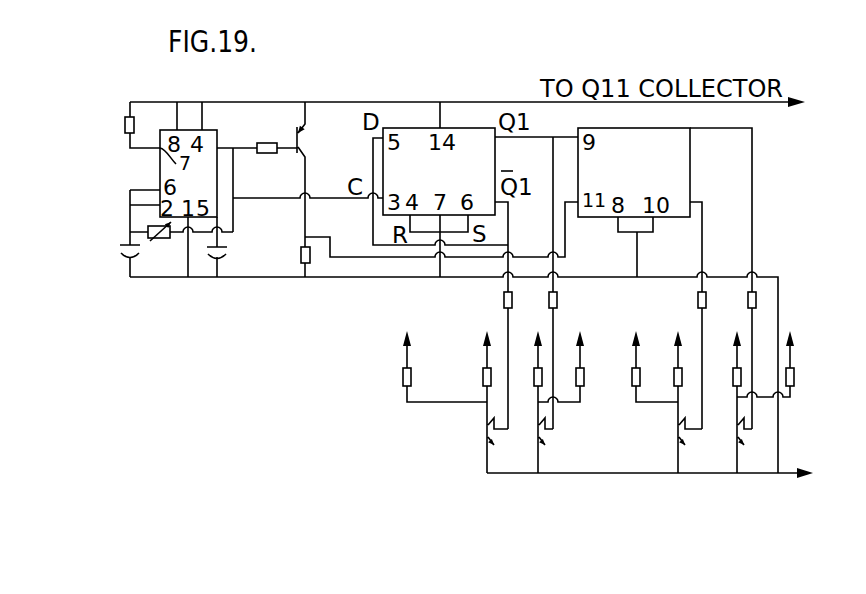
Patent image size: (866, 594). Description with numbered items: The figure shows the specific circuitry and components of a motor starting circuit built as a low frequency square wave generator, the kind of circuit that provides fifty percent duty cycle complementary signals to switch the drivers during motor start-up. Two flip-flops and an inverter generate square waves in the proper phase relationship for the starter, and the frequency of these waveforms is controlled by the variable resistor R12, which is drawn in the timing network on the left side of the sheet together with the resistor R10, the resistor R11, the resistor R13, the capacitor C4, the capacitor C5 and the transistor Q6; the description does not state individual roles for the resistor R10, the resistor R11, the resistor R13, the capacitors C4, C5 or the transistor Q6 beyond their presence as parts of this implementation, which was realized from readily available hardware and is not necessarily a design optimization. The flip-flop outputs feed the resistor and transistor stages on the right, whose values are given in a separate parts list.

The resistor R10 is at (121, 125).
The resistor R11 is at (257, 135).
The variable resistor R12 is at (181, 244).
The resistor R13 is at (287, 264).
The capacitor C4 is at (113, 252).
The capacitor C5 is at (234, 252).
The transistor Q6 is at (316, 150).